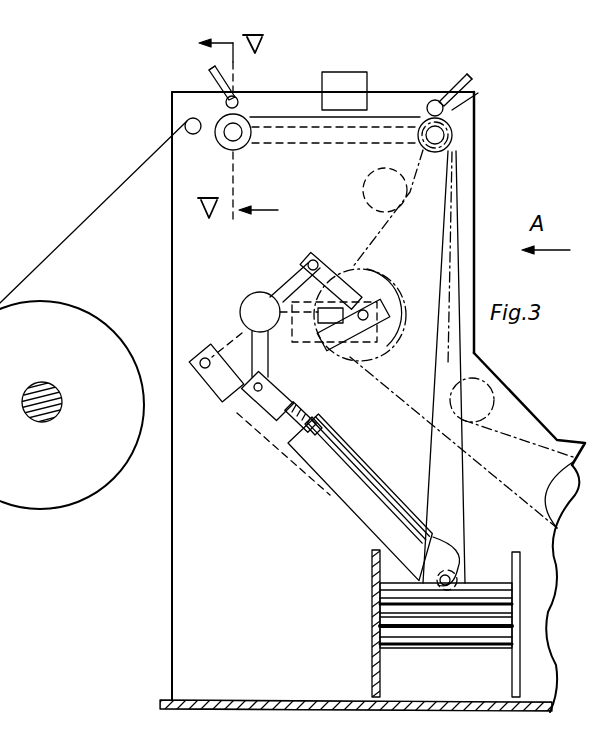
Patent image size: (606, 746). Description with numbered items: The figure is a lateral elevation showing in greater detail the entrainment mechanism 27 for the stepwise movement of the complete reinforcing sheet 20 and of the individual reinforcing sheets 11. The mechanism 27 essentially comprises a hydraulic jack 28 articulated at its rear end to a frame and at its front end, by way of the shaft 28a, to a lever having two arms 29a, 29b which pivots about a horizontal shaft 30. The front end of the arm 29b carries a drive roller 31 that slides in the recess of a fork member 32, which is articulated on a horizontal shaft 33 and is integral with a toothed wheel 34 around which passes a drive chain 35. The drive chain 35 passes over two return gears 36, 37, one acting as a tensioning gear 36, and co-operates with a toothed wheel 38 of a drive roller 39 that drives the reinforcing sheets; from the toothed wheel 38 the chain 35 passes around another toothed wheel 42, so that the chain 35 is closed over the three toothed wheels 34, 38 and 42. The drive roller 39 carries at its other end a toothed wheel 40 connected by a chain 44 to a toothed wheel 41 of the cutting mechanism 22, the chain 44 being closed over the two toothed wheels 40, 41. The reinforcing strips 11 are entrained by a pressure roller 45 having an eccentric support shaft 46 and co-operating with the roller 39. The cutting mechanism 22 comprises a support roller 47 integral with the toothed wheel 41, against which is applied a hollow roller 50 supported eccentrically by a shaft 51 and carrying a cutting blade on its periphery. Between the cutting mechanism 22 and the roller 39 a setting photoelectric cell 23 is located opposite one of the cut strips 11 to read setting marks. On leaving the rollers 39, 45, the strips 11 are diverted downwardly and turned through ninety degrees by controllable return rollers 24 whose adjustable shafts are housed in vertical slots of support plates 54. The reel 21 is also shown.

The individual reinforcing sheet 11 is at (442, 465).
The complete reinforcing sheet 20 is at (128, 172).
The supply reel 21 is at (45, 420).
The cutting mechanism 22 is at (197, 78).
The setting photoelectric cell 23 is at (345, 82).
The controllable return rollers 24 is at (415, 645).
The entrainment mechanism 27 is at (216, 302).
The hydraulic jack 28 is at (350, 493).
The shaft 28a is at (257, 400).
The lever arm 29a is at (250, 348).
The lever arm 29b is at (280, 286).
The horizontal shaft 30 is at (249, 306).
The drive roller 31 is at (310, 263).
The fork member 32 is at (372, 330).
The horizontal shaft 33 is at (342, 340).
The toothed wheel 34 is at (388, 275).
The drive chain 35 is at (408, 416).
The tensioning gear 36 is at (363, 196).
The return gear 37 is at (490, 383).
The toothed wheel 38 is at (452, 110).
The drive roller 39 is at (452, 130).
The toothed wheel 40 is at (453, 142).
The toothed wheel 41 is at (218, 120).
The toothed wheel 42 is at (548, 472).
The chain 44 is at (341, 141).
The pressure roller 45 is at (429, 103).
The eccentric support shaft 46 is at (440, 100).
The support roller 47 is at (226, 144).
The hollow roller 50 is at (244, 105).
The shaft 51 is at (238, 97).
The support plates 54 is at (368, 670).